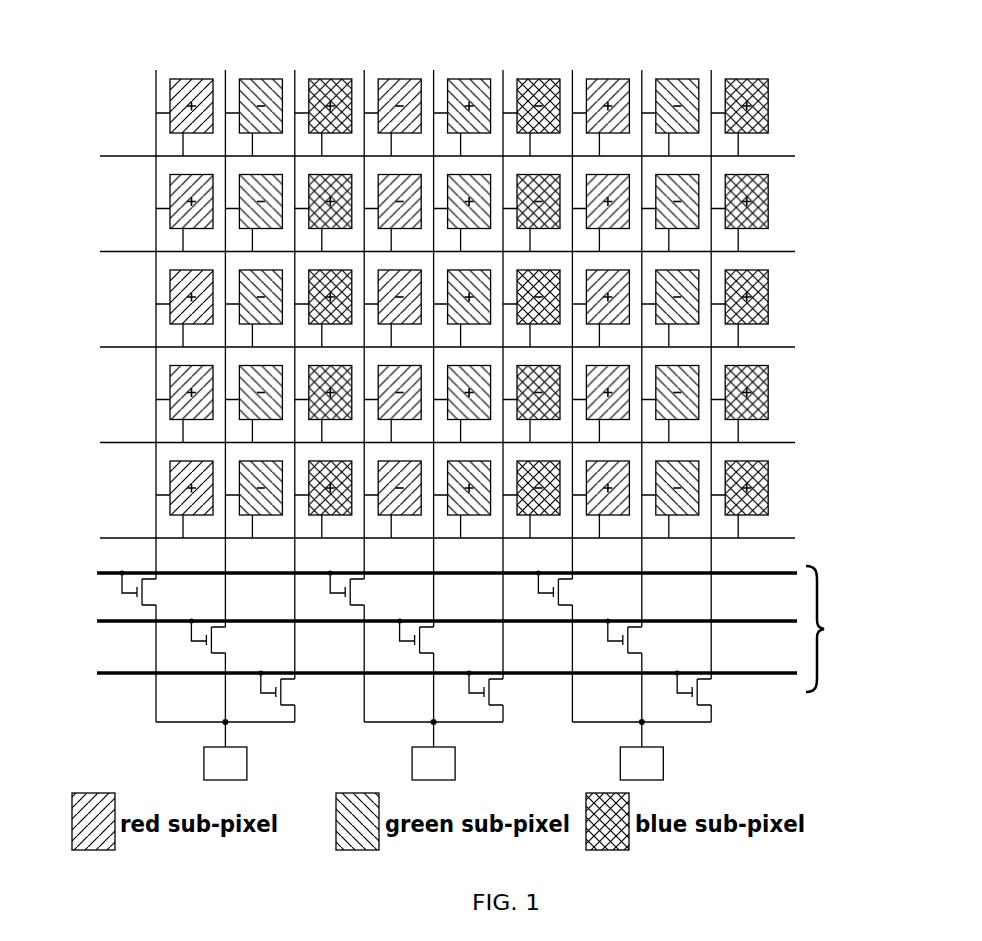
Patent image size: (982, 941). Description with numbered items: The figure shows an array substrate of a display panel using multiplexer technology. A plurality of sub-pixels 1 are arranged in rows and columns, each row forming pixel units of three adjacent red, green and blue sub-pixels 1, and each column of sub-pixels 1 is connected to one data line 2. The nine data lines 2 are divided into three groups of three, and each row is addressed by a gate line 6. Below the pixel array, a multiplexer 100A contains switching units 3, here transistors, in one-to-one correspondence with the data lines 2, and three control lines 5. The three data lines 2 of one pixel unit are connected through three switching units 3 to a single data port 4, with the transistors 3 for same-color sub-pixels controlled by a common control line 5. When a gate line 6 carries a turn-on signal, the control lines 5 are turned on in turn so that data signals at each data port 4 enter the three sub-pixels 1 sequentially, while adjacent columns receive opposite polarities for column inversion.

The sub-pixel 1 is at (318, 78).
The data line 2 is at (365, 76).
The switching unit 3 is at (140, 607).
The data port 4 is at (225, 765).
The control line 5 is at (122, 674).
The gate line 6 is at (125, 153).
The multiplexer 100A is at (851, 629).